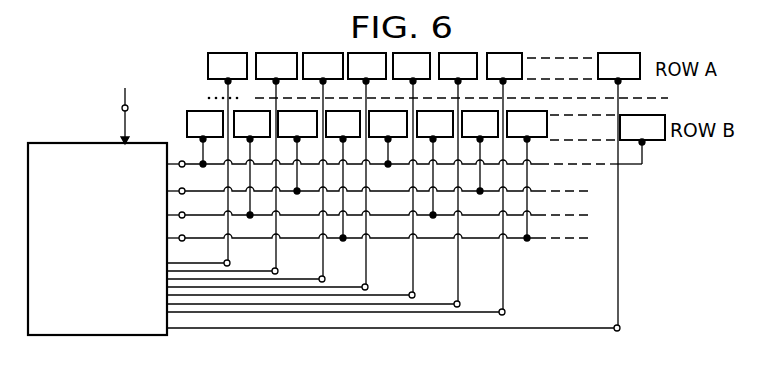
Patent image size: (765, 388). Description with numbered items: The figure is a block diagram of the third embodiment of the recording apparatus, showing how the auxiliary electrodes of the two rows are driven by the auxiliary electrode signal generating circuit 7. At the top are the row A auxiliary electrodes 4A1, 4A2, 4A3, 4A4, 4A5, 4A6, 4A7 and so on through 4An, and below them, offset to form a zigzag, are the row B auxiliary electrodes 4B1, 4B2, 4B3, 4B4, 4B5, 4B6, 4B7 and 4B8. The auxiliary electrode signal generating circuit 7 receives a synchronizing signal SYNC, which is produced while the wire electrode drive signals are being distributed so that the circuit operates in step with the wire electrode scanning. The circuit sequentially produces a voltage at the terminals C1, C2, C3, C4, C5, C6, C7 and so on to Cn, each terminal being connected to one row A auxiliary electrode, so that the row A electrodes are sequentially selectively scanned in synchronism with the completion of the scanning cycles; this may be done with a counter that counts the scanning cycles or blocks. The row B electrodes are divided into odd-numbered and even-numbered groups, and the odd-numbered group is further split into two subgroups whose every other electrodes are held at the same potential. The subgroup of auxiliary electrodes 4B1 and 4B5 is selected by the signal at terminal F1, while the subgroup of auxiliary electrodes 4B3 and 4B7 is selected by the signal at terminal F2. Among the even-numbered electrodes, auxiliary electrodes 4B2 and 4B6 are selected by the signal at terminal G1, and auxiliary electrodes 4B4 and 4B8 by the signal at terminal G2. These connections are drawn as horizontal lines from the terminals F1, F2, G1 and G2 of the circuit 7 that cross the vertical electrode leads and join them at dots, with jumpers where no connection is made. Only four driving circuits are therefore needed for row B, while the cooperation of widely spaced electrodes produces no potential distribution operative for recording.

The auxiliary electrode signal generating circuit 7 is at (110, 336).
The synchronizing signal SYNC is at (91, 116).
The auxiliary electrode 4A1 is at (227, 156).
The auxiliary electrode 4A2 is at (276, 160).
The auxiliary electrode 4A3 is at (323, 164).
The auxiliary electrode 4A4 is at (367, 168).
The auxiliary electrode 4A5 is at (411, 172).
The auxiliary electrode 4A6 is at (458, 177).
The auxiliary electrode 4A7 is at (504, 181).
The auxiliary electrode 4An is at (619, 189).
The auxiliary electrode 4B1 is at (205, 139).
The auxiliary electrode 4B2 is at (252, 164).
The auxiliary electrode 4B3 is at (297, 152).
The auxiliary electrode 4B4 is at (343, 176).
The auxiliary electrode 4B5 is at (388, 139).
The auxiliary electrode 4B6 is at (435, 164).
The auxiliary electrode 4B7 is at (480, 152).
The auxiliary electrode 4B8 is at (527, 176).
The terminal F1 is at (185, 148).
The terminal F2 is at (185, 175).
The terminal G1 is at (185, 199).
The terminal G2 is at (183, 241).
The terminal C1 is at (232, 251).
The terminal C2 is at (280, 259).
The terminal C3 is at (327, 267).
The terminal C4 is at (370, 275).
The terminal C5 is at (417, 283).
The terminal C6 is at (462, 292).
The terminal C7 is at (507, 300).
The terminal Cn is at (622, 316).